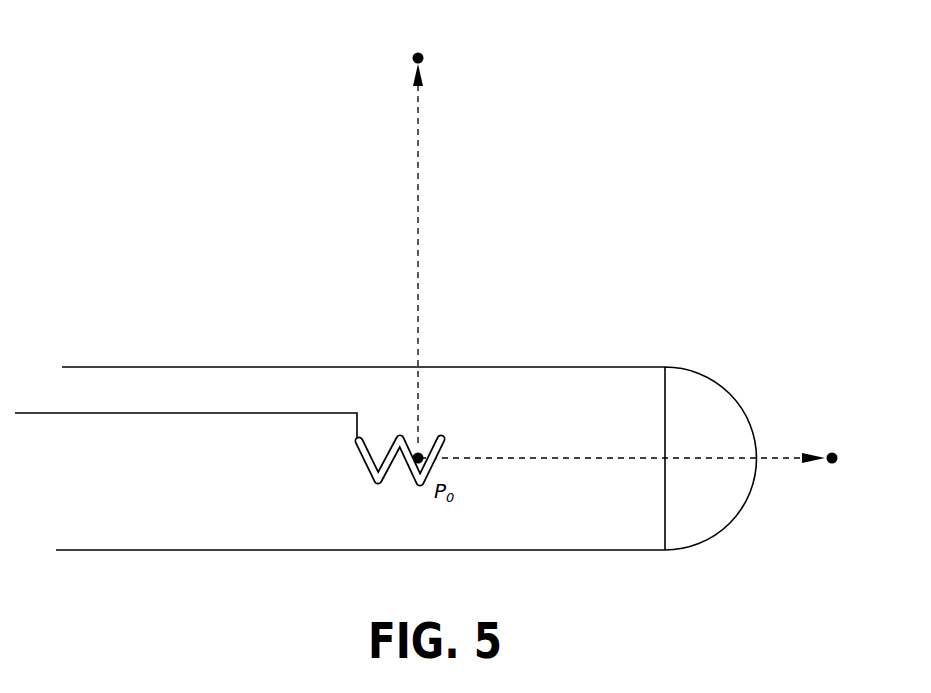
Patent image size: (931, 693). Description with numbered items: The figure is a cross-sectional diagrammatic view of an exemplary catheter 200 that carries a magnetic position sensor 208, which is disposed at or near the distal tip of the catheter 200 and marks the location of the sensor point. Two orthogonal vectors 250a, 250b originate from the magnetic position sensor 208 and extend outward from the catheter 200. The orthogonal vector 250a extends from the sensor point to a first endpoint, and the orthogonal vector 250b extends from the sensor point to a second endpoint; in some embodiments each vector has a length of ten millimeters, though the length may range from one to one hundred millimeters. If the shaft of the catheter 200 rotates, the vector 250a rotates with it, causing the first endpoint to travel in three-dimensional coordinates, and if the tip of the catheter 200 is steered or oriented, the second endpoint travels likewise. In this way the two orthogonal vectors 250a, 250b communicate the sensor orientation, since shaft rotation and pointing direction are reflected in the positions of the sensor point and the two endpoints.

The catheter 200 is at (190, 302).
The magnetic position sensor 208 is at (336, 467).
The orthogonal vector 250a is at (418, 276).
The orthogonal vector 250b is at (634, 462).